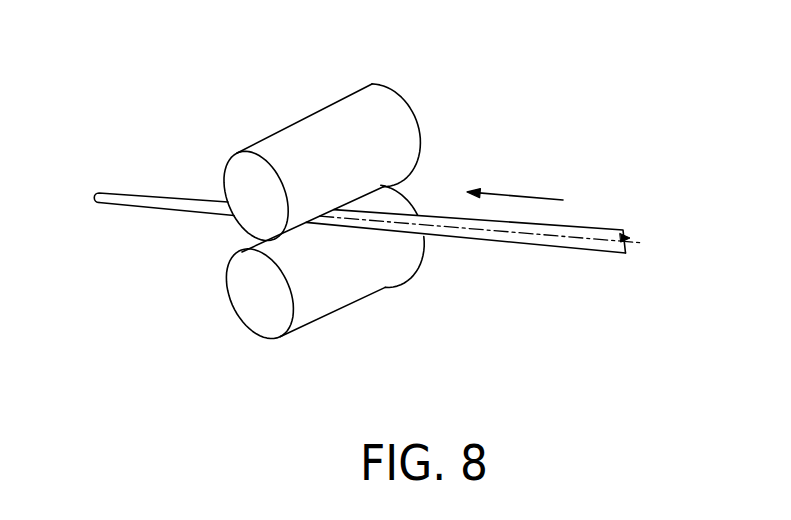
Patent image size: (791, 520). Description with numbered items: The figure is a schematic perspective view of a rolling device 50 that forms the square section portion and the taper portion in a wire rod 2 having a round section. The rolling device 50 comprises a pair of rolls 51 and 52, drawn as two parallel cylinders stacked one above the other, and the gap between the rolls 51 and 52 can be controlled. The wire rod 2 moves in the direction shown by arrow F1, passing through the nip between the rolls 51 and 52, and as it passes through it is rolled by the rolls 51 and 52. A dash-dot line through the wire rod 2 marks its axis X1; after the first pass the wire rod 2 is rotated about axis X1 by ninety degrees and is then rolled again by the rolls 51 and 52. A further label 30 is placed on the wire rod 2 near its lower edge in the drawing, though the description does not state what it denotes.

The rolling device 50 is at (300, 188).
The roll 51 is at (347, 297).
The roll 52 is at (318, 124).
The wire rod 2 is at (368, 248).
The surface portion of strip 30 is at (486, 241).
The axis X1 is at (558, 237).
The arrow F1 is at (524, 195).